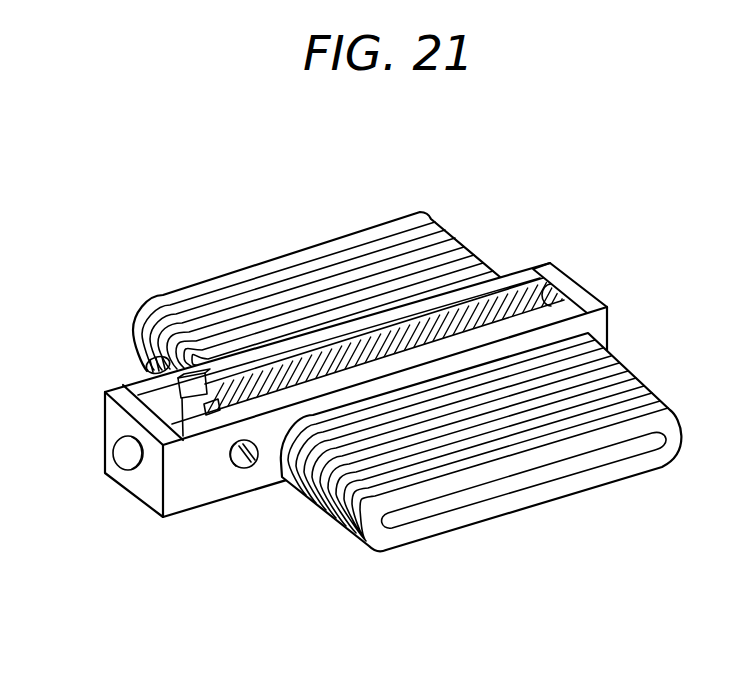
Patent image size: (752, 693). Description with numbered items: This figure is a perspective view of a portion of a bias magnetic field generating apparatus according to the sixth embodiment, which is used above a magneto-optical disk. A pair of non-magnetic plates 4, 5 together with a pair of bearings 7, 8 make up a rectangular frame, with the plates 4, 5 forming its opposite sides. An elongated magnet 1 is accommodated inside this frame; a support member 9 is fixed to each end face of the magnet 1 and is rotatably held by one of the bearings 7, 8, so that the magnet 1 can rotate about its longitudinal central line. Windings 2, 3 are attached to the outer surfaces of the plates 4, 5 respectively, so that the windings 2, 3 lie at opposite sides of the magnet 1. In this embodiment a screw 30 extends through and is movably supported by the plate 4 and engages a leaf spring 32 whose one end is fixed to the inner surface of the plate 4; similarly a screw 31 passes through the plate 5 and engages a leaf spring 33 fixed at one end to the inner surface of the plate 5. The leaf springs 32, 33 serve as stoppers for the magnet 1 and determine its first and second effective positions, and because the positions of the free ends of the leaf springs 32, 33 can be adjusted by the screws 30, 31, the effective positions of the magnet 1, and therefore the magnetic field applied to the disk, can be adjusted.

The magnet 1 is at (517, 290).
The winding 2 is at (542, 490).
The winding 3 is at (376, 262).
The plate 4 is at (207, 497).
The plate 5 is at (478, 287).
The bearing 7 is at (572, 293).
The bearing 8 is at (133, 483).
The support member 9 is at (118, 457).
The screw 30 is at (243, 472).
The screw 31 is at (147, 362).
The leaf spring 32 is at (198, 408).
The leaf spring 33 is at (199, 373).